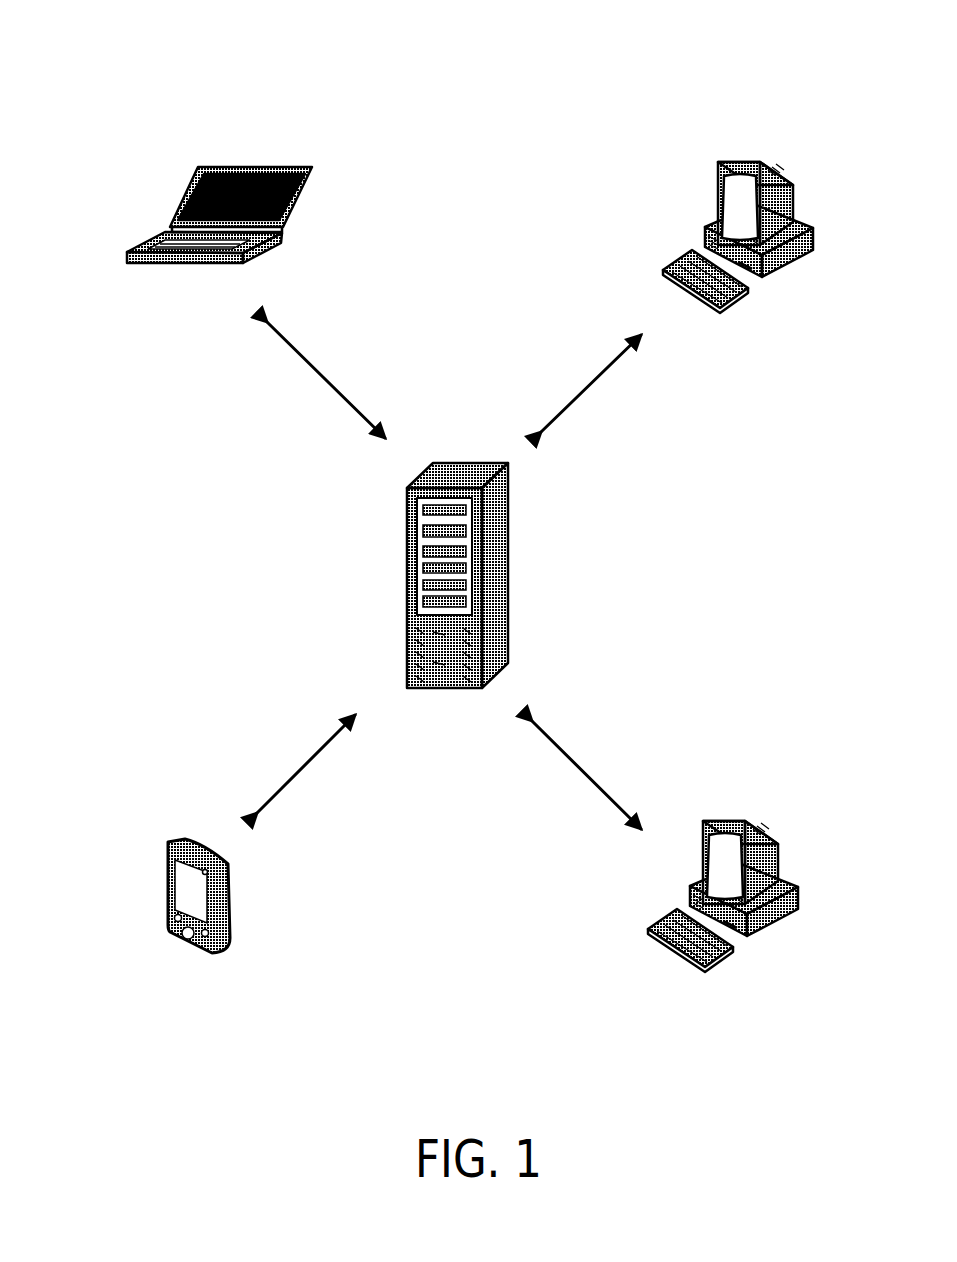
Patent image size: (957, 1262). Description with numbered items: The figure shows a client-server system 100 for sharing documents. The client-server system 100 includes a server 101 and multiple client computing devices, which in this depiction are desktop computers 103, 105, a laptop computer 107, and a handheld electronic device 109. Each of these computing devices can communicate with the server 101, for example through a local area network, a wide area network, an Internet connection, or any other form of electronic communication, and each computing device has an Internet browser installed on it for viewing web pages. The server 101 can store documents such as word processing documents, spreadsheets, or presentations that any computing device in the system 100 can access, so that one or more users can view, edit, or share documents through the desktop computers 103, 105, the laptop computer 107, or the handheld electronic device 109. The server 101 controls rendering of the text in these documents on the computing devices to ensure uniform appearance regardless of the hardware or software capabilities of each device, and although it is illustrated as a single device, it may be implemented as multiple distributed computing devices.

The client-server system 100 is at (492, 36).
The server 101 is at (395, 577).
The desktop computer 103 is at (797, 283).
The desktop computer 105 is at (788, 928).
The laptop computer 107 is at (102, 257).
The handheld electronic device 109 is at (143, 922).